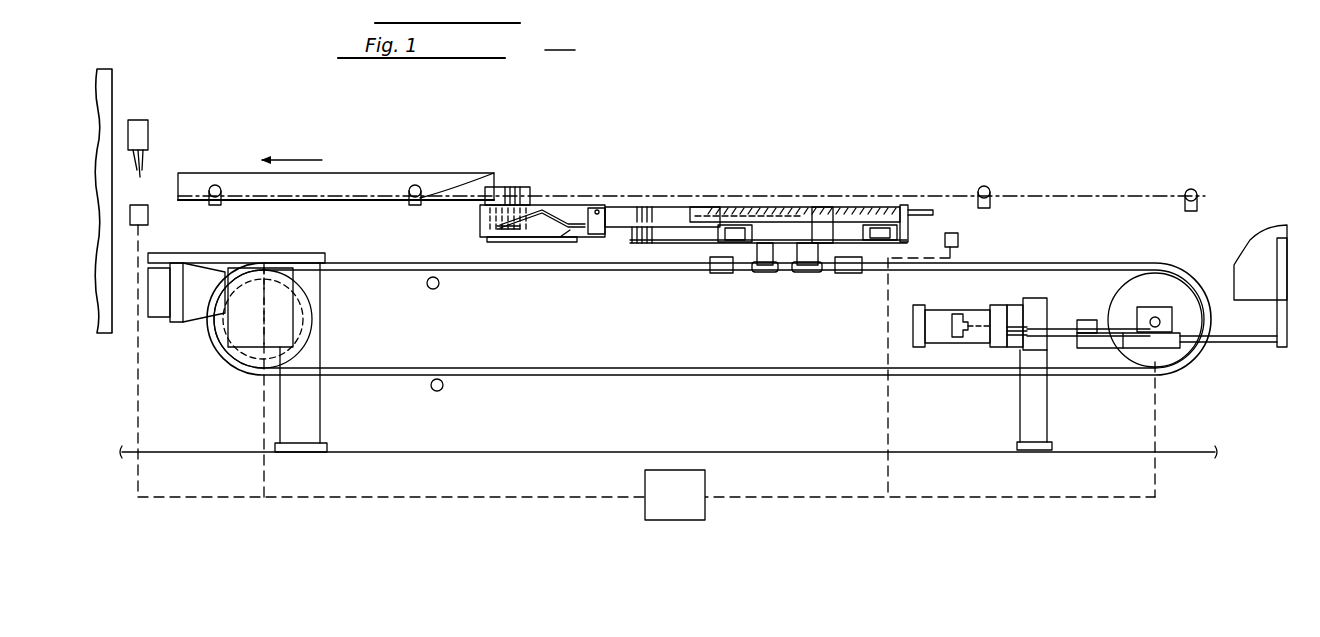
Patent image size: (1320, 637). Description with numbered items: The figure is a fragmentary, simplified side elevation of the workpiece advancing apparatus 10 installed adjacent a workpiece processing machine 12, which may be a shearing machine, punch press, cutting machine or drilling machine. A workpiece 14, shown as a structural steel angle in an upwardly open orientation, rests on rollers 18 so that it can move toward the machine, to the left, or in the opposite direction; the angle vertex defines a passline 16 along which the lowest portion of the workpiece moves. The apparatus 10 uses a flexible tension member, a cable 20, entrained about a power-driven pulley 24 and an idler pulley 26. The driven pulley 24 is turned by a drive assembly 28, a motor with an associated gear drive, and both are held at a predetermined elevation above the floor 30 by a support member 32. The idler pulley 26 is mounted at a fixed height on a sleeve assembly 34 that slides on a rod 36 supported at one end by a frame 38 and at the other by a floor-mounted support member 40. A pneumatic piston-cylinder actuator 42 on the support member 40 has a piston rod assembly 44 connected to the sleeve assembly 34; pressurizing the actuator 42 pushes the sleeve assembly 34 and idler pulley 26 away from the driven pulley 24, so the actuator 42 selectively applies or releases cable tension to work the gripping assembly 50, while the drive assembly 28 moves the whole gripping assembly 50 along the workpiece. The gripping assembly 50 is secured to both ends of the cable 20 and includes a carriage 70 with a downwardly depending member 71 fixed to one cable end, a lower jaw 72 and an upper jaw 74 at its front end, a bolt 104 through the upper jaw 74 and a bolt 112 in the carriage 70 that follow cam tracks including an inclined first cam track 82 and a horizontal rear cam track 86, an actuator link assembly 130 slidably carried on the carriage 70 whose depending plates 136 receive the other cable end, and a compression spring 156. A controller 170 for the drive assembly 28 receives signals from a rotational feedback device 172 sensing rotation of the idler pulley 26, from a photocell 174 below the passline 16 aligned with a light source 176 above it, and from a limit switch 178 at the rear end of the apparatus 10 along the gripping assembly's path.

The workpiece advancing apparatus 10 is at (958, 150).
The workpiece processing machine 12 is at (124, 78).
The workpiece 14 is at (448, 170).
The passline 16 is at (785, 195).
The rollers 18 is at (215, 205).
The cable 20 is at (470, 268).
The power-driven pulley 24 is at (305, 316).
The idler pulley 26 is at (1110, 295).
The drive assembly 28 is at (245, 318).
The floor 30 is at (455, 452).
The support member 32 is at (310, 420).
The sleeve assembly 34 is at (1168, 348).
The rod 36 is at (1243, 343).
The frame 38 is at (1265, 290).
The floor-mounted support member 40 is at (1015, 305).
The piston-cylinder actuator 42 is at (945, 303).
The piston rod assembly 44 is at (1055, 328).
The gripping assembly 50 is at (633, 205).
The carriage 70 is at (640, 243).
The downwardly depending member 71 is at (760, 255).
The lower jaw 72 is at (480, 210).
The upper jaw 74 is at (520, 187).
The inclined first cam track 82 is at (540, 242).
The horizontal rear cam track 86 is at (582, 222).
The bolt 104 is at (500, 237).
The bolt 112 is at (570, 242).
The actuator link assembly 130 is at (722, 205).
The depending plates 136 is at (810, 250).
The compression spring 156 is at (878, 212).
The controller 170 is at (690, 515).
The rotational feedback device 172 is at (1155, 300).
The photocell 174 is at (148, 213).
The light source 176 is at (148, 135).
The limit switch 178 is at (958, 238).